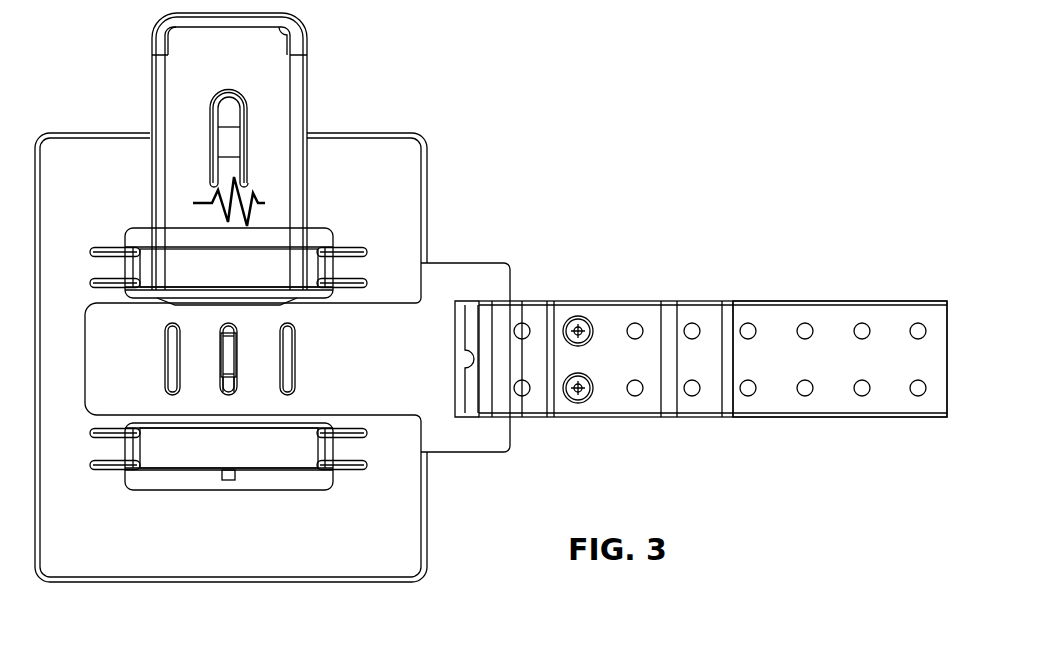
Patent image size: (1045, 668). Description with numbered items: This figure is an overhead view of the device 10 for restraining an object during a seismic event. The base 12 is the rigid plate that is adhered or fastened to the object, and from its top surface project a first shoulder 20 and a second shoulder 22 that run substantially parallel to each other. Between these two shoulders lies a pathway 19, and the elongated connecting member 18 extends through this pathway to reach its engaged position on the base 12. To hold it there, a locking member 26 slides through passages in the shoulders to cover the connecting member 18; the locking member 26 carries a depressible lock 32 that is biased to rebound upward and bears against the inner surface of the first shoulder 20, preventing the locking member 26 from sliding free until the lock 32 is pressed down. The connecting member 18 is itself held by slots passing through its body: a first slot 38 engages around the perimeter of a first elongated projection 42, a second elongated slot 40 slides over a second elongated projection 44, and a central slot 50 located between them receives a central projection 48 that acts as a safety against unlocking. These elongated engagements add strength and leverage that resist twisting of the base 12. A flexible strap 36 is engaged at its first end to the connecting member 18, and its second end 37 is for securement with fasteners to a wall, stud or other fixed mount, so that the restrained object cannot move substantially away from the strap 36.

The device 10 is at (545, 225).
The base 12 is at (382, 155).
The connecting member 18 is at (467, 277).
The pathway 19 is at (297, 318).
The first shoulder 20 is at (318, 267).
The second shoulder 22 is at (320, 452).
The locking member 26 is at (303, 98).
The depressible lock 32 is at (237, 117).
The strap 36 is at (642, 313).
The second end 37 is at (927, 307).
The first slot 38 is at (285, 353).
The second elongated slot 40 is at (165, 370).
The first elongated projection 42 is at (280, 347).
The second elongated projection 44 is at (172, 357).
The central projection 48 is at (227, 353).
The central slot 50 is at (223, 380).